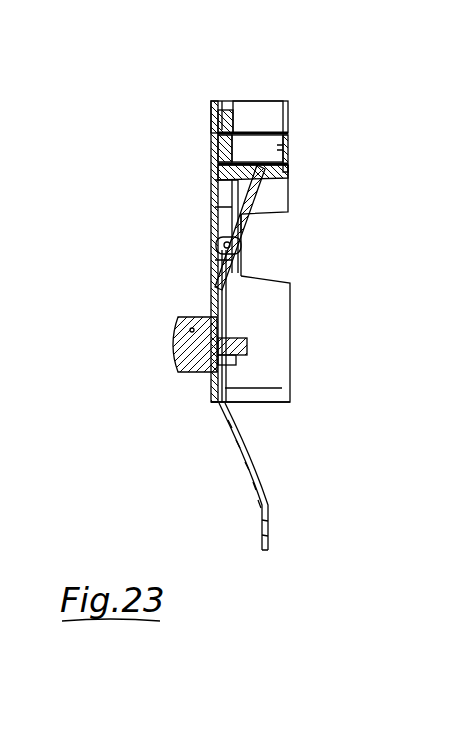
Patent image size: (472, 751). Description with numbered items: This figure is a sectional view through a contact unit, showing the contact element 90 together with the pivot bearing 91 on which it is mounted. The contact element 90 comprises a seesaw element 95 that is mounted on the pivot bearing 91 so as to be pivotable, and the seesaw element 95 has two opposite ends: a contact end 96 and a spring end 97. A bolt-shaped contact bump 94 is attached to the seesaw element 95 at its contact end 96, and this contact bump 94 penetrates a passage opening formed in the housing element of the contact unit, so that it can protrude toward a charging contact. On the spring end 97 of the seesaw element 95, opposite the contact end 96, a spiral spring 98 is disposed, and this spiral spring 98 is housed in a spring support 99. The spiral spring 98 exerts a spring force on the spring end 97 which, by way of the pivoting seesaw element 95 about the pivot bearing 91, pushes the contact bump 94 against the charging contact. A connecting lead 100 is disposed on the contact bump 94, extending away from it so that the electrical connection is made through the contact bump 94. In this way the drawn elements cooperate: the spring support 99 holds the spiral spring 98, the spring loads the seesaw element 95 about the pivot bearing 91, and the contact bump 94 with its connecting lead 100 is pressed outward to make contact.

The contact element 90 is at (205, 263).
The pivot bearing 91 is at (241, 233).
The contact bump 94 is at (178, 342).
The seesaw element 95 is at (212, 195).
The contact end 96 is at (247, 362).
The spring end 97 is at (300, 155).
The spiral spring 98 is at (245, 133).
The spring support 99 is at (290, 192).
The connecting lead 100 is at (265, 530).